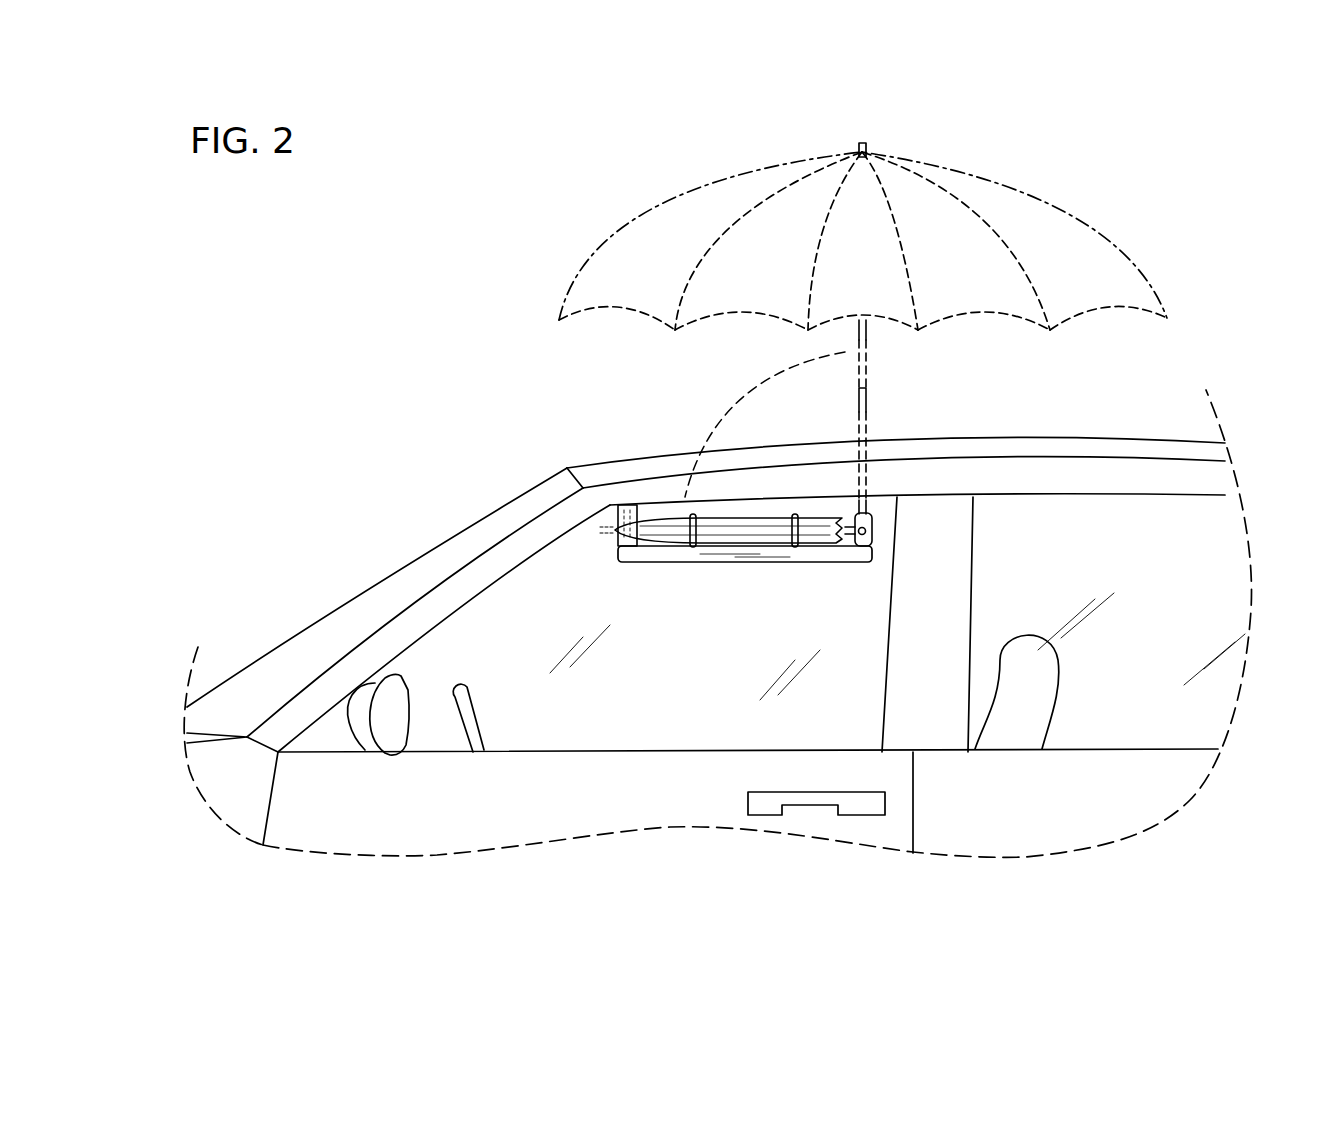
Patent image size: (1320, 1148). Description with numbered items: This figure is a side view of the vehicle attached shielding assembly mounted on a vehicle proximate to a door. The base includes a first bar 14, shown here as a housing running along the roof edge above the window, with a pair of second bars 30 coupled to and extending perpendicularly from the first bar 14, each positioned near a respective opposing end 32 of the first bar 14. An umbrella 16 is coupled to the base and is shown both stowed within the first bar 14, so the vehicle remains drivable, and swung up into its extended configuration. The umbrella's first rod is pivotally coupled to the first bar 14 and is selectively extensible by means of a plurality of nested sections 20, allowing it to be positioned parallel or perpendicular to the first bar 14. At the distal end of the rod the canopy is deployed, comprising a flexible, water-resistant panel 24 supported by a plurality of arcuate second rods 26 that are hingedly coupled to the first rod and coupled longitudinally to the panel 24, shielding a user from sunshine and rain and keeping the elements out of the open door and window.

The first bar 14 is at (762, 465).
The umbrella 16 is at (762, 530).
The nested sections 20 is at (879, 360).
The panel 24 is at (773, 242).
The second rods 26 is at (905, 227).
The second bars 30 is at (625, 503).
The opposing ends 32 is at (613, 551).